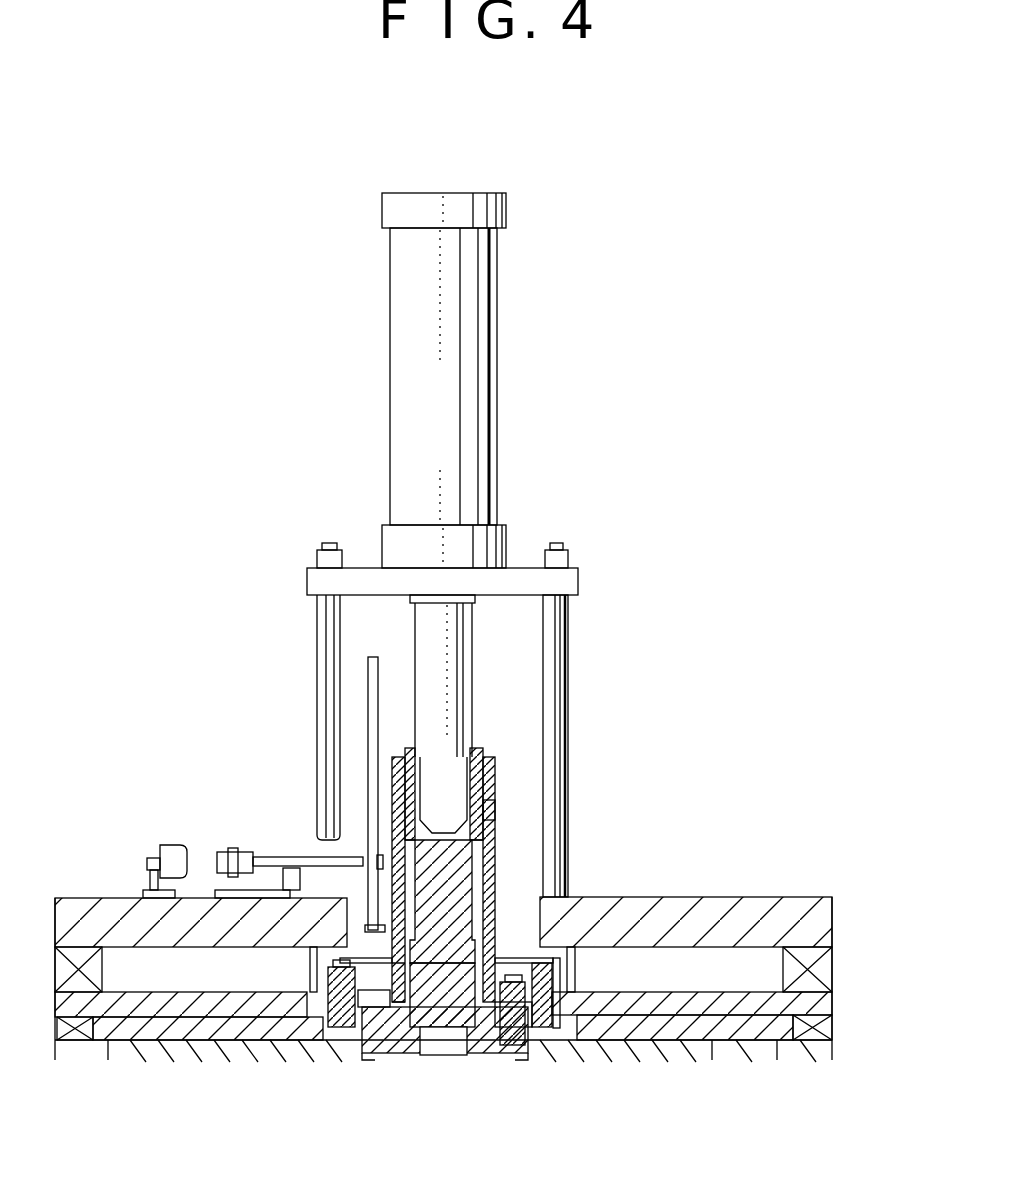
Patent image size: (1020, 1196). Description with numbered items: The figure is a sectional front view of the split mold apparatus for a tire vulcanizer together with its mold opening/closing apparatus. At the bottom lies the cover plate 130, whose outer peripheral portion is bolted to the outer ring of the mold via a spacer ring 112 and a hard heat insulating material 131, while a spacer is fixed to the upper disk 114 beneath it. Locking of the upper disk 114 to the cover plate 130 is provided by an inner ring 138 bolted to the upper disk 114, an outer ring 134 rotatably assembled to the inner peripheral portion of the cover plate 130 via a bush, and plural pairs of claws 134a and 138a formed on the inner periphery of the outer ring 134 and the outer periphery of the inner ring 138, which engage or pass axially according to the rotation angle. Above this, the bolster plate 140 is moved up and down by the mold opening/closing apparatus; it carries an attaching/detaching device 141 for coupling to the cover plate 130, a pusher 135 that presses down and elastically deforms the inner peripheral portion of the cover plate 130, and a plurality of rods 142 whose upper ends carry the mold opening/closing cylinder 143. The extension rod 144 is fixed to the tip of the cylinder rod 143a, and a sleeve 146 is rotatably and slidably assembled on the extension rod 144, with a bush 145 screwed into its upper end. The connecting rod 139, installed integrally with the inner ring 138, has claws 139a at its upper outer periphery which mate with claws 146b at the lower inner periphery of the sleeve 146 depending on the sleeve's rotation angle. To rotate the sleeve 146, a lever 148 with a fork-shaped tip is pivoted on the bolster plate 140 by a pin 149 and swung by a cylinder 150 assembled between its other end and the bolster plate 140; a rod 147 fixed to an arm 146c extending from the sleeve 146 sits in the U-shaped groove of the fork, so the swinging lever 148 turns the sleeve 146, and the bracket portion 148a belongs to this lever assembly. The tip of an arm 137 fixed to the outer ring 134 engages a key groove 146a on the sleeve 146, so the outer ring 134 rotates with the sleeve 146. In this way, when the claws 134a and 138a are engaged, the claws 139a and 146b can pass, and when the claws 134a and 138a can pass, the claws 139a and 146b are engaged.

The spacer ring 112 is at (832, 1050).
The upper disk 114 is at (692, 1045).
The cover plate 130 is at (832, 1003).
The hard heat insulating material 131 is at (832, 1030).
The outer ring 134 is at (552, 968).
The claws 134a is at (356, 1048).
The pusher 135 is at (555, 965).
The arm 137 is at (520, 957).
The inner ring 138 is at (482, 1045).
The claws 138a is at (330, 1035).
The connecting rod 139 is at (450, 1030).
The claws 139a is at (395, 975).
The bolster plate 140 is at (718, 897).
The attaching/detaching device 141 is at (832, 962).
The rods 142 is at (568, 656).
The mold opening/closing cylinder 143 is at (497, 450).
The rod 143a is at (472, 622).
The extension rod 144 is at (462, 857).
The bush 145 is at (485, 748).
The sleeve 146 is at (492, 790).
The key groove 146a is at (498, 810).
The claws 146b is at (426, 1053).
The arm 146c is at (392, 905).
The rod 147 is at (366, 665).
The lever 148 is at (312, 857).
The bracket tab 148a is at (362, 857).
The pin 149 is at (290, 858).
The cylinder 150 is at (200, 857).